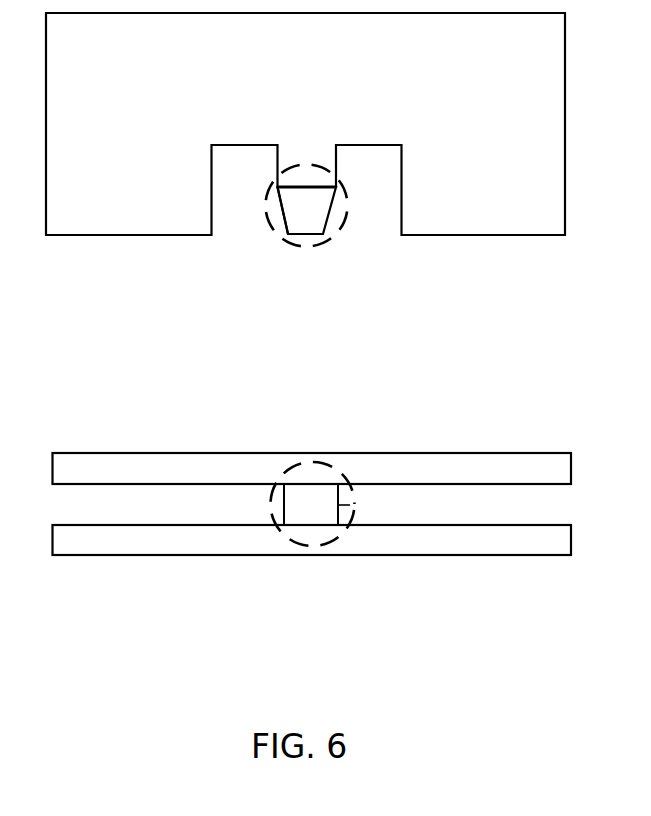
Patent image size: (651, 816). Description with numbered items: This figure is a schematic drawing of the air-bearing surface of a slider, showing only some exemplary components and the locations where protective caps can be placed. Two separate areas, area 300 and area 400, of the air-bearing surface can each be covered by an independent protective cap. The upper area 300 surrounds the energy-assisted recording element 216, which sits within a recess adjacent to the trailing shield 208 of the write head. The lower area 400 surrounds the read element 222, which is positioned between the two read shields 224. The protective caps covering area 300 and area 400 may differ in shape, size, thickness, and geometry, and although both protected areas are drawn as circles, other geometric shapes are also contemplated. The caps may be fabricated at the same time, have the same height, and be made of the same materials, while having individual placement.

The mold body 208 is at (336, 166).
The groove 216 is at (278, 219).
The insert 300 is at (283, 220).
The detail region 400 is at (307, 463).
The gap 222 is at (348, 504).
The plates 224 is at (571, 465).